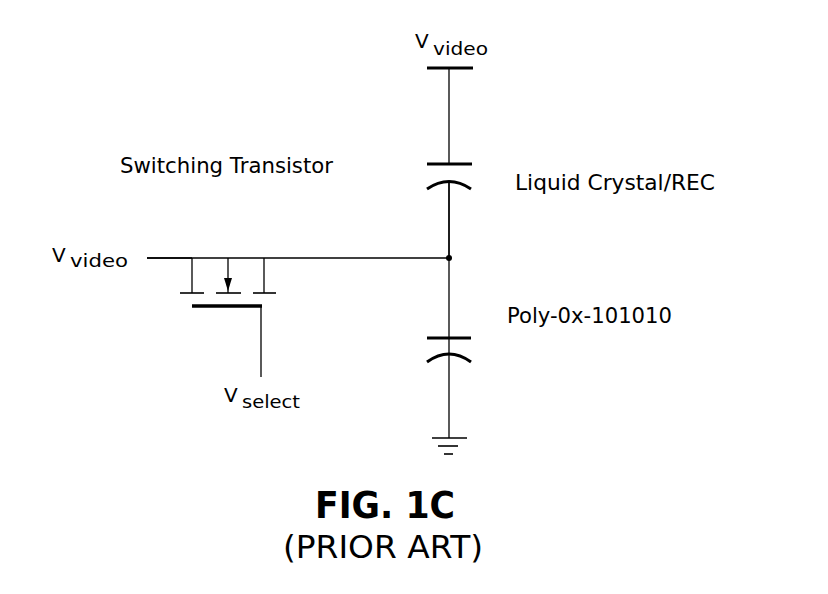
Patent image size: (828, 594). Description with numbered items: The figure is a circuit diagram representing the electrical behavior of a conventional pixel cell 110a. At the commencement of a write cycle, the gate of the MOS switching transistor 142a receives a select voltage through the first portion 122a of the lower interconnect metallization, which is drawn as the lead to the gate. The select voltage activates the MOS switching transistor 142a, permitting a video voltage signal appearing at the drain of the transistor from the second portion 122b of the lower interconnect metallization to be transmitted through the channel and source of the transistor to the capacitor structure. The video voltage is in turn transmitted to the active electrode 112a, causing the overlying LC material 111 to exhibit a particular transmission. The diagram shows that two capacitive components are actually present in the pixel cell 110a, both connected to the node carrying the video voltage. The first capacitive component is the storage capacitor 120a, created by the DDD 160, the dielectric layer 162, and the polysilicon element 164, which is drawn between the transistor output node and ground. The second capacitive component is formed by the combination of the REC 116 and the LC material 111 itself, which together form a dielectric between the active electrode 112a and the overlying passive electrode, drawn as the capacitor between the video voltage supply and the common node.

The pixel cell 110a is at (236, 80).
The MOS switching transistor 142a is at (230, 252).
The second portion of lower interconnect metallization 122b is at (157, 260).
The first portion of lower interconnect metallization 122a is at (261, 348).
The LC material 111 is at (497, 157).
The REC 116 is at (470, 176).
The active electrode 112a is at (443, 186).
The storage capacitor 120a is at (453, 337).
The polysilicon element 164 is at (438, 335).
The dielectric layer 162 is at (432, 347).
The DDD 160 is at (438, 366).